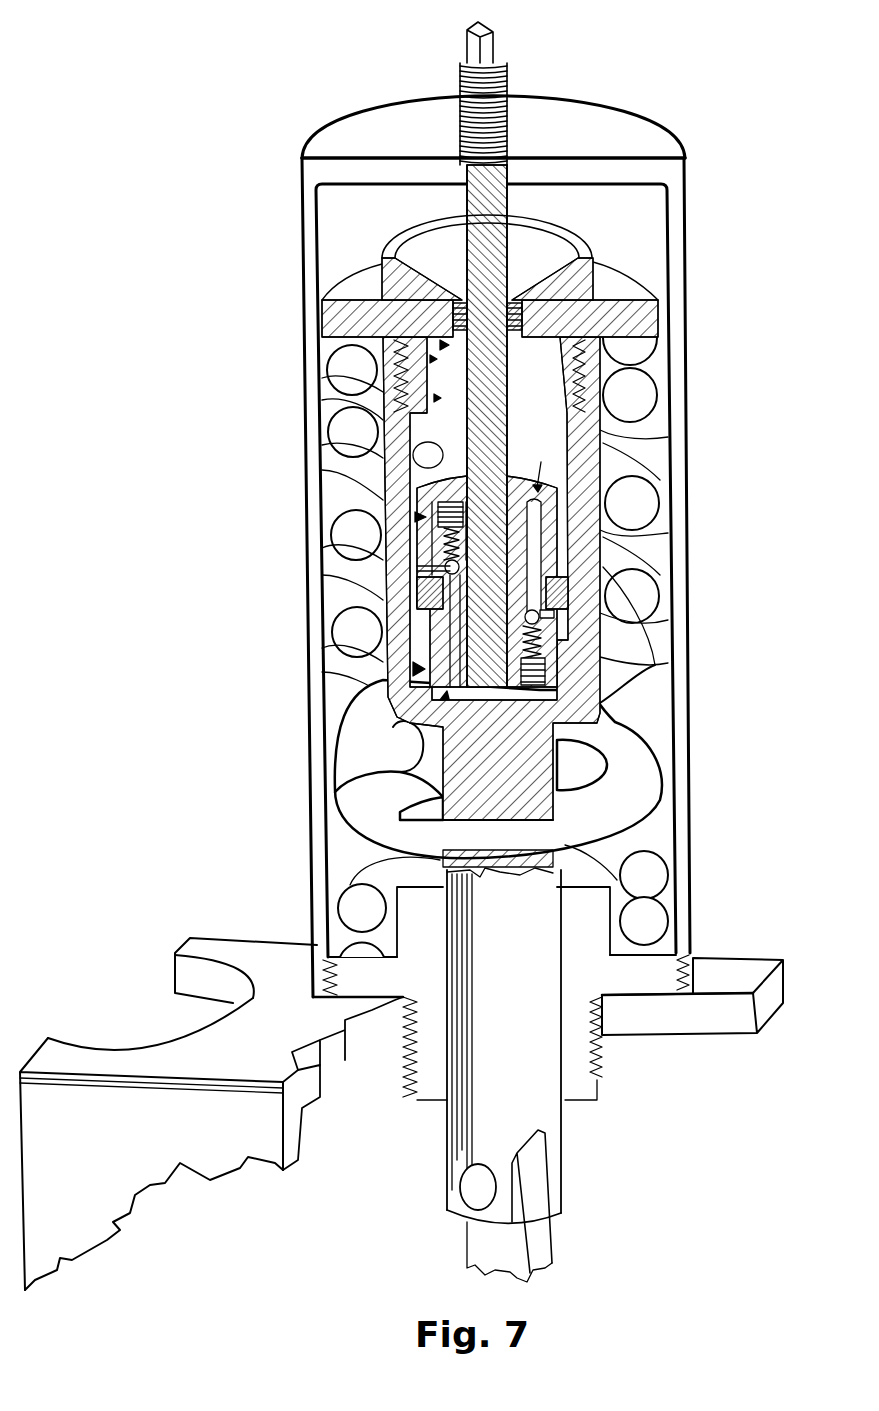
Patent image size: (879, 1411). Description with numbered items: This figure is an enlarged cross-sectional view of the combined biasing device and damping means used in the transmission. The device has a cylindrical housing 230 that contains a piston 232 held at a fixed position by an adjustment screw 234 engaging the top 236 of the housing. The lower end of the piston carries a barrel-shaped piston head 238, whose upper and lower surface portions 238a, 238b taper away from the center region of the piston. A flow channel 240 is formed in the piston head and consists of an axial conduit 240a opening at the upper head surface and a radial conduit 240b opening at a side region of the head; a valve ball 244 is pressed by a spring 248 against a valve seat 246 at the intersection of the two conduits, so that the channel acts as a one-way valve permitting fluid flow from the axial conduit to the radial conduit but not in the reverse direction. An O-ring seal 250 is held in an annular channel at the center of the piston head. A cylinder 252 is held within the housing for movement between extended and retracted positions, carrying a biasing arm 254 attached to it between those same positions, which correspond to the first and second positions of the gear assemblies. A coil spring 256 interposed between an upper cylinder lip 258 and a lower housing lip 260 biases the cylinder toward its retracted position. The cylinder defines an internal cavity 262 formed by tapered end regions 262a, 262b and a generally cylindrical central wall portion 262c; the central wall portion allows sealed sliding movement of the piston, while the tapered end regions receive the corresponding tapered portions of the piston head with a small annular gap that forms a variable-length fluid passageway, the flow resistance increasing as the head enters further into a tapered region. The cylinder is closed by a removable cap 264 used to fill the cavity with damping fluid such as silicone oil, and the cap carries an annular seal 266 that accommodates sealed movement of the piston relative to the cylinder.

The cylindrical housing 230 is at (672, 202).
The piston 232 is at (520, 465).
The adjustment screw 234 is at (478, 78).
The top of the housing 236 is at (537, 150).
The piston head 238 is at (545, 556).
The upper surface portion of the piston head 238a is at (418, 517).
The lower surface portion of the piston head 238b is at (415, 669).
The flow channel 240 is at (560, 505).
The axial conduit 240a is at (565, 540).
The radial conduit 240b is at (545, 650).
The valve ball 244 is at (560, 593).
The valve seat 246 is at (550, 578).
The spring 248 is at (548, 670).
The O-ring seal 250 is at (436, 590).
The cylinder 252 is at (600, 432).
The biasing arm 254 is at (567, 1113).
The coil spring 256 is at (645, 777).
The upper cylinder lip 258 is at (647, 312).
The lower housing lip 260 is at (637, 980).
The internal cavity 262 is at (432, 398).
The tapered end region 262a is at (441, 345).
The tapered end region 262b is at (443, 696).
The cylindrical central wall portion 262c is at (413, 457).
The cap 264 is at (423, 247).
The annular seal 266 is at (520, 305).